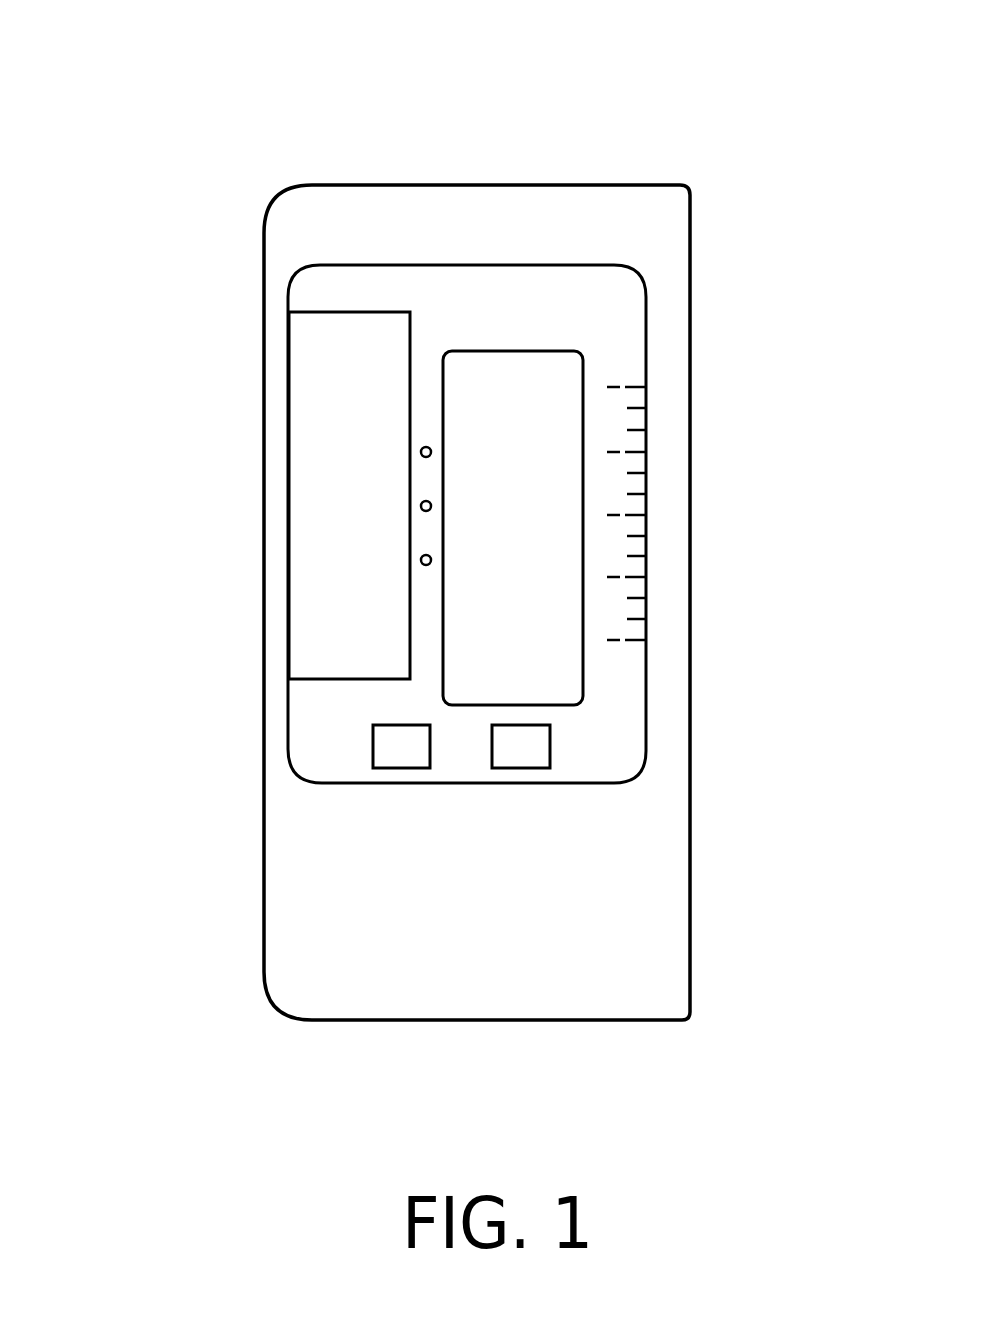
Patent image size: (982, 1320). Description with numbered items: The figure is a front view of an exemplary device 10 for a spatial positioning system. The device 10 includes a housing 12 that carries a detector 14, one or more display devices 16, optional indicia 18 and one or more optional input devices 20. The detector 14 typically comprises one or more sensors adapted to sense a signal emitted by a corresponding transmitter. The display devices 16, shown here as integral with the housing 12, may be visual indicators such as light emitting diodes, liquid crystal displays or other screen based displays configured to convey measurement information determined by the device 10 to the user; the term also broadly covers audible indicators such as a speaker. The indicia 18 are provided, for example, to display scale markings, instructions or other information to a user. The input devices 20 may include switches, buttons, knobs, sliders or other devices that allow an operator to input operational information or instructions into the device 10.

The device 10 is at (286, 64).
The housing 12 is at (263, 267).
The detector 14 is at (317, 423).
The display devices 16 is at (429, 400).
The indicia 18 is at (690, 452).
The input devices 20 is at (478, 766).